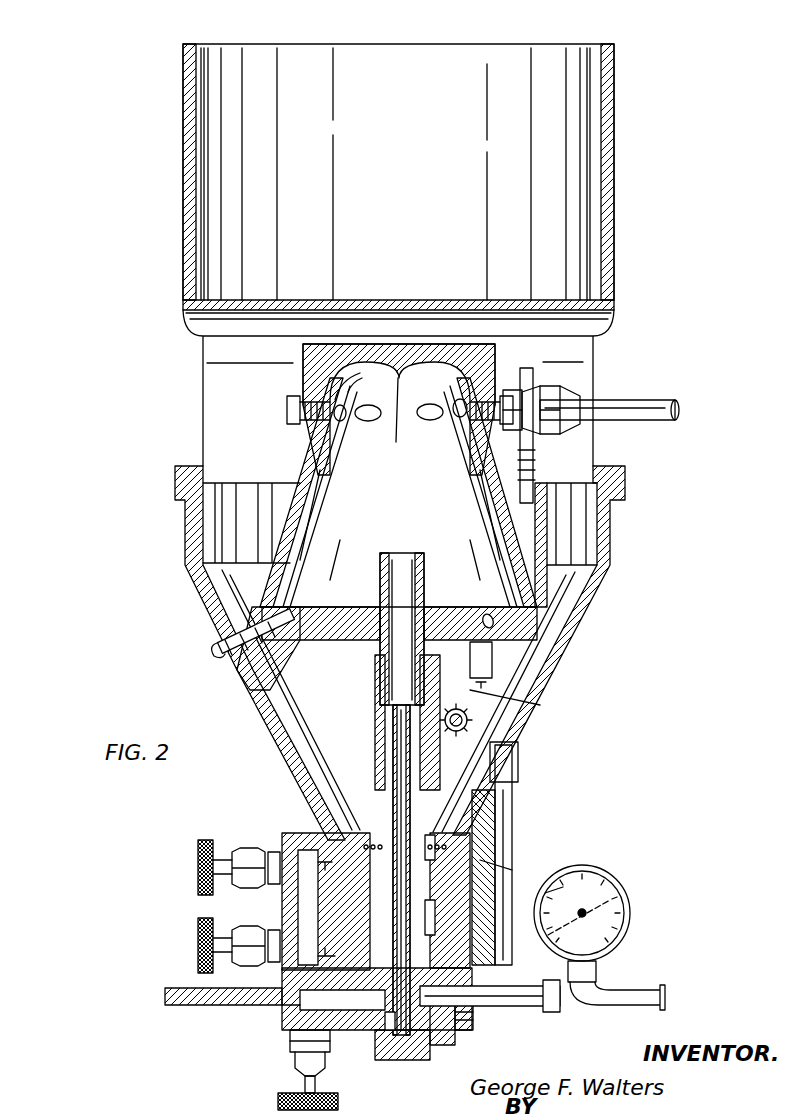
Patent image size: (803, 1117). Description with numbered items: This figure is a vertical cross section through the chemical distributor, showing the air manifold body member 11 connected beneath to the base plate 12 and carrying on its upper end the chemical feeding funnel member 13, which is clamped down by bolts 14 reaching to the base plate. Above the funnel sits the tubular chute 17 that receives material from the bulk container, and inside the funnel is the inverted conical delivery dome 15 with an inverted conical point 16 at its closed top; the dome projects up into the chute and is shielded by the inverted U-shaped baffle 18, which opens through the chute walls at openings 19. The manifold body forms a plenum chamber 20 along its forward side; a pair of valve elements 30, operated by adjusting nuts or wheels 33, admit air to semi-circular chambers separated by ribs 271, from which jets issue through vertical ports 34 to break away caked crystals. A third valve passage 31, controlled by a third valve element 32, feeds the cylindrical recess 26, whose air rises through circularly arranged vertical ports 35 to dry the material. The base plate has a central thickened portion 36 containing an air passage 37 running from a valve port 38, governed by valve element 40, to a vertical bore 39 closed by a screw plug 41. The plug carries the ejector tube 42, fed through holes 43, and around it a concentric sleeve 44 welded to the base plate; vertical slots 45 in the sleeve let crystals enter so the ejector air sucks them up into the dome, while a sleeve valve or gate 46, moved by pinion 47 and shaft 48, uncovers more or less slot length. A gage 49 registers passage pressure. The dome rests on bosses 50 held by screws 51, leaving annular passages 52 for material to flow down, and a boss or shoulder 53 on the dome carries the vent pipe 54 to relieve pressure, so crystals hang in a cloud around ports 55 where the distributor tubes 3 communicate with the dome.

The distributor tubes 3 is at (660, 412).
The air manifold body member 11 is at (472, 867).
The base plate 12 is at (490, 983).
The chemical feeding funnel member 13 is at (535, 706).
The bolts 14 is at (500, 845).
The inverted conical delivery dome 15 is at (520, 590).
The inverted conical point 16 is at (396, 400).
The tubular chute 17 is at (612, 206).
The inverted U-shaped baffle 18 is at (455, 300).
The baffle openings 19 is at (203, 346).
The plenum chamber 20 is at (300, 898).
The cylindrical recess 26 is at (470, 1012).
The valve elements 30 is at (300, 852).
The third valve passage 31 is at (290, 1010).
The third valve element 32 is at (280, 1000).
The adjusting nuts or wheels 33 is at (192, 930).
The vertical ports 34 is at (505, 855).
The circularly arranged vertical ports 35 is at (563, 887).
The central thickened portion 36 is at (360, 1020).
The air passage 37 is at (387, 1080).
The valve port 38 is at (295, 1040).
The vertical bore 39 is at (432, 1050).
The valve element 40 is at (300, 1062).
The screw plug 41 is at (410, 1065).
The ejector tube 42 is at (432, 755).
The holes 43 is at (445, 1032).
The sleeve 44 is at (483, 657).
The vertical slots 45 is at (393, 768).
The sleeve valve or gate 46 is at (380, 737).
The pinion 47 is at (465, 720).
The shaft 48 is at (470, 728).
The gage 49 is at (630, 915).
The bosses 50 is at (260, 618).
The screws 51 is at (240, 636).
The annular passages 52 is at (555, 622).
The boss or shoulder 53 is at (605, 512).
The vent pipe 54 is at (540, 442).
The ports 55 is at (287, 408).
The ribs 271 is at (345, 855).